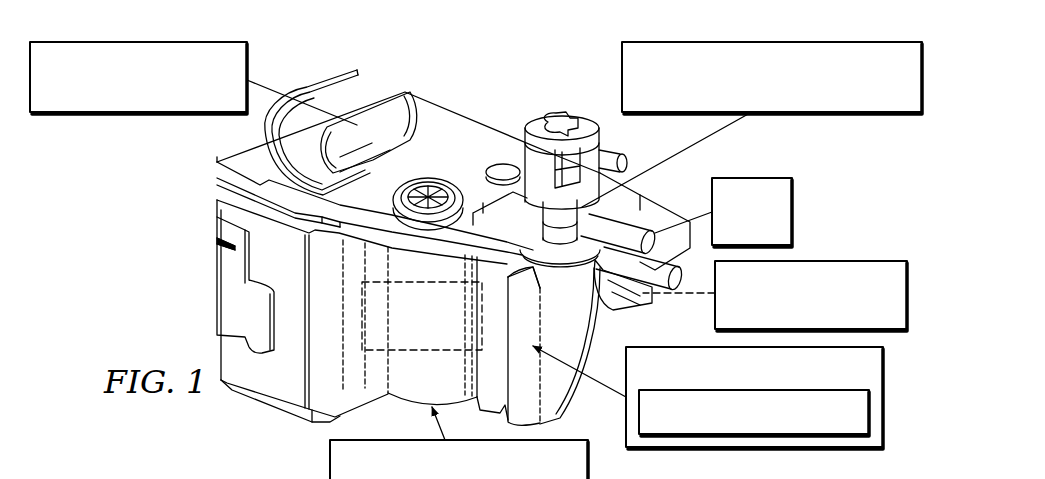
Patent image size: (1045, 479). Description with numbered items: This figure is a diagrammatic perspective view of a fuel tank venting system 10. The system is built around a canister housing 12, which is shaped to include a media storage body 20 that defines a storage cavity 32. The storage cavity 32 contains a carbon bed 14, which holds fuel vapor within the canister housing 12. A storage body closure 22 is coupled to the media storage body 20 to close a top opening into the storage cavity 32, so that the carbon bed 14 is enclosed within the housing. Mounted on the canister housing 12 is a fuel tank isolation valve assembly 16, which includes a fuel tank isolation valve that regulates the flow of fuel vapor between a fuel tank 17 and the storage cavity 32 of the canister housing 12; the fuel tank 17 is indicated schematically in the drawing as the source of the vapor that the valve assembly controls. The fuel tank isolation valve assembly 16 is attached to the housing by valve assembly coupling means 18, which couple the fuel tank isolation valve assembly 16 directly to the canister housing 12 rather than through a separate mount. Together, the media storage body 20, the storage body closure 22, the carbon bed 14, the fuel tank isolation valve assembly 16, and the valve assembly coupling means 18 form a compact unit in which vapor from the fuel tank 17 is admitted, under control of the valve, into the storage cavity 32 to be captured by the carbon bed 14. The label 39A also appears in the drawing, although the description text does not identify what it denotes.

The fuel tank venting system 10 is at (847, 198).
The canister housing 12 is at (588, 462).
The carbon bed 14 is at (362, 316).
The fuel tank isolation valve assembly 16 is at (622, 88).
The fuel tank 17 is at (760, 177).
The valve assembly coupling means 18 is at (862, 260).
The media storage body 20 is at (883, 372).
The storage body closure 22 is at (140, 114).
The storage cavity 32 is at (870, 412).
The canister housing side 39A is at (413, 443).